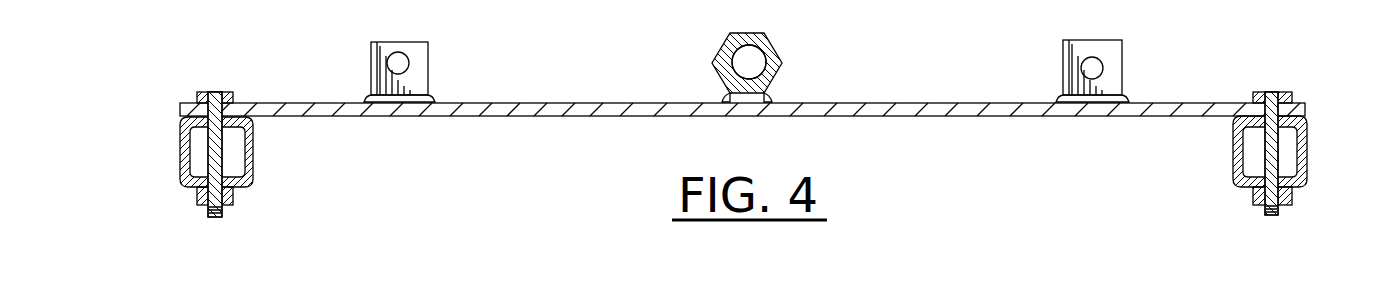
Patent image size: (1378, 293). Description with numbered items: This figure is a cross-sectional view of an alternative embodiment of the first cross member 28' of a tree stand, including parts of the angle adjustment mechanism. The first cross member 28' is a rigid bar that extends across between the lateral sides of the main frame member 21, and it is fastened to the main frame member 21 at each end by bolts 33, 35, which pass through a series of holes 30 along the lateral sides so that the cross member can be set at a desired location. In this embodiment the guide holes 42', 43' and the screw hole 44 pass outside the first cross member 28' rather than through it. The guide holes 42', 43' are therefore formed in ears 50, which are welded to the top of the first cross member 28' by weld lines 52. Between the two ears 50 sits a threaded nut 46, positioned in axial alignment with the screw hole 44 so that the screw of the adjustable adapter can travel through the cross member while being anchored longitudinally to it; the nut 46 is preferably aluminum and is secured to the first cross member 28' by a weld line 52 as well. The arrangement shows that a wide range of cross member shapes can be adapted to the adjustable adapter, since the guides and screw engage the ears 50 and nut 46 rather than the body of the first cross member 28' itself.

The main frame member 21 is at (181, 170).
The first cross member 28' is at (742, 76).
The holes 30 is at (212, 180).
The bolt 33 is at (210, 92).
The bolt 35 is at (1277, 92).
The guide hole 42' is at (436, 66).
The guide hole 43' is at (1130, 65).
The screw hole 44 is at (734, 68).
The threaded nut 46 is at (777, 51).
The ear 50 is at (372, 56).
The weld line 52 is at (430, 99).